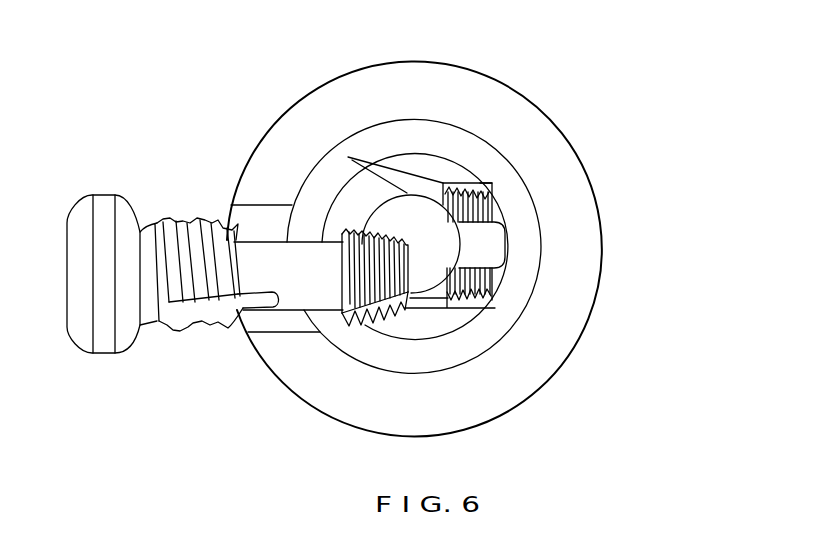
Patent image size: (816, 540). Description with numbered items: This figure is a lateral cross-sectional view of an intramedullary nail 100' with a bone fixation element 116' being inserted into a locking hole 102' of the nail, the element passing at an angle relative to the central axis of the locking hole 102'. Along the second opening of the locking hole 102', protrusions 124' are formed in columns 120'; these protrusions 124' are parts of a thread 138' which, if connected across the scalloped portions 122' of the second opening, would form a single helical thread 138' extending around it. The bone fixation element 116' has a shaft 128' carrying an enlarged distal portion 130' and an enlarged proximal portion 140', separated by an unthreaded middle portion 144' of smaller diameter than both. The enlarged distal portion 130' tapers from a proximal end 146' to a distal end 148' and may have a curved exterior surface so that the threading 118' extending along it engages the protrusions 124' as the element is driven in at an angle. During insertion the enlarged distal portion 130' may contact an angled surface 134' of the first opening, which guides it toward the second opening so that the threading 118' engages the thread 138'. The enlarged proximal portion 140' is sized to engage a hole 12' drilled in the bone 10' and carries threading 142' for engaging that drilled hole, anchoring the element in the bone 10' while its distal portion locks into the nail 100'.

The bone 10' is at (456, 248).
The hole 12' is at (373, 214).
The socket body 100' is at (439, 182).
The locking hole 102' is at (414, 103).
The bone fixation element 116' is at (109, 226).
The threading 118' is at (350, 164).
The columns 120' is at (533, 245).
The scalloped portions 122' is at (563, 255).
The protrusions 124' is at (522, 215).
The shaft 128' is at (250, 233).
The enlarged distal portion 130' is at (338, 377).
The angled surface 134' is at (482, 383).
The thread 138' is at (566, 187).
The enlarged proximal portion 140' is at (180, 368).
The threading 142' is at (120, 315).
The unthreaded middle portion 144' is at (232, 361).
The proximal end 146' is at (298, 190).
The distal end 148' is at (411, 150).